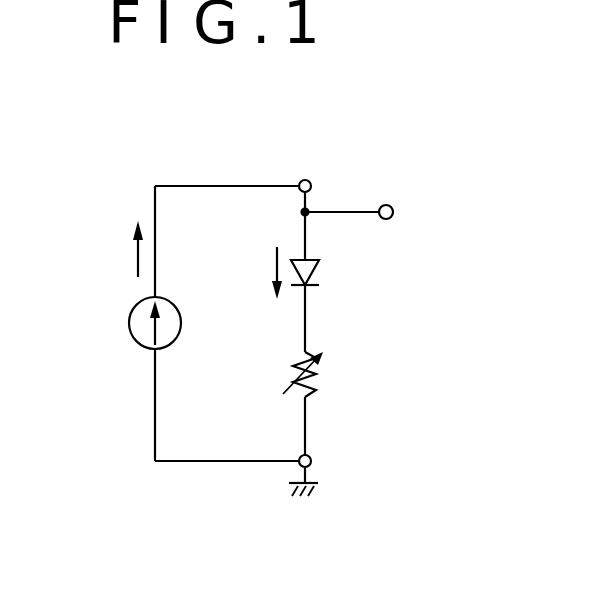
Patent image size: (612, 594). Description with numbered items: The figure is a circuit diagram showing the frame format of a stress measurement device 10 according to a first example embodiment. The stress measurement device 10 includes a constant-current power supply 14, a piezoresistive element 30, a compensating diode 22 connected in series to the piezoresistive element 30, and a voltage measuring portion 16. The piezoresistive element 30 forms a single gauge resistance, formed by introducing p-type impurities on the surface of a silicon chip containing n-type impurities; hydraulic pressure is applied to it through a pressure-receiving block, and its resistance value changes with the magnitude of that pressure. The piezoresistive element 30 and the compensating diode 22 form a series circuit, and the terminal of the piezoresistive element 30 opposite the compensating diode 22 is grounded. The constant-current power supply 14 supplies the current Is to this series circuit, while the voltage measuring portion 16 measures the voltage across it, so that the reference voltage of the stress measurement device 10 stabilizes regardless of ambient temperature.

The stress measurement device 10 is at (352, 121).
The constant-current power supply 14 is at (181, 321).
The voltage measuring portion 16 is at (393, 212).
The compensating diode 22 is at (317, 268).
The piezoresistive element 30 is at (317, 373).